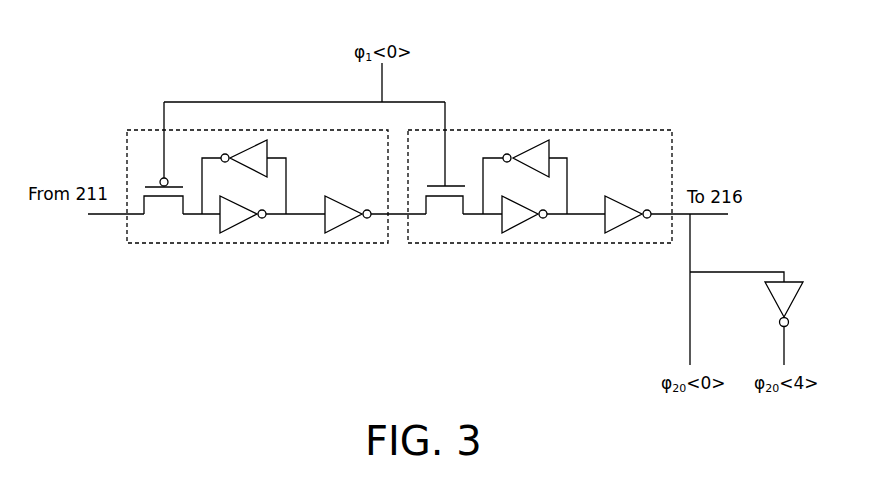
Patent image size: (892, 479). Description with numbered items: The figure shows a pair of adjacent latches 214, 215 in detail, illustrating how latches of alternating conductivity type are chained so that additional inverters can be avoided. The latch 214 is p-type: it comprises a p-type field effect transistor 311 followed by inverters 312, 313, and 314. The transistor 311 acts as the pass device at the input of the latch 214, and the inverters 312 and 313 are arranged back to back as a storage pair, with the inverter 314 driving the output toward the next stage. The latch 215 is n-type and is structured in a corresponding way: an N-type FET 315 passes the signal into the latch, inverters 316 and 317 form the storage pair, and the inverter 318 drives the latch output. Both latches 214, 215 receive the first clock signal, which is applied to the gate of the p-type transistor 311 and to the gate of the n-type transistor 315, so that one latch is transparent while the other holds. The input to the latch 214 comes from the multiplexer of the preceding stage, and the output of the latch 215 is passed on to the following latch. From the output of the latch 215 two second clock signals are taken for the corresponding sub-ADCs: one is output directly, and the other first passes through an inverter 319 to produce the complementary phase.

The latch 214 is at (128, 129).
The latch 215 is at (620, 129).
The p-type field effect transistor 311 is at (165, 215).
The inverter 312 is at (232, 233).
The inverter 313 is at (235, 148).
The inverter 314 is at (350, 232).
The N-type field effect transistor 315 is at (457, 228).
The inverter 316 is at (522, 231).
The inverter 317 is at (513, 148).
The inverter 318 is at (633, 231).
The inverter 319 is at (795, 282).